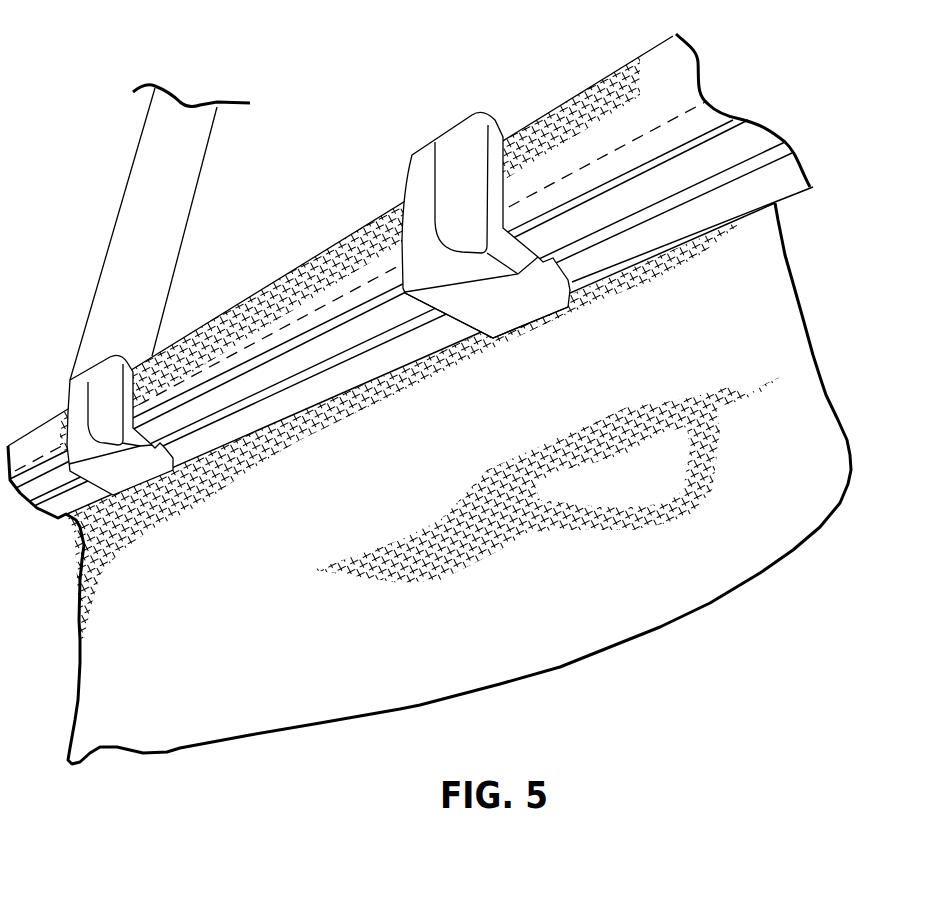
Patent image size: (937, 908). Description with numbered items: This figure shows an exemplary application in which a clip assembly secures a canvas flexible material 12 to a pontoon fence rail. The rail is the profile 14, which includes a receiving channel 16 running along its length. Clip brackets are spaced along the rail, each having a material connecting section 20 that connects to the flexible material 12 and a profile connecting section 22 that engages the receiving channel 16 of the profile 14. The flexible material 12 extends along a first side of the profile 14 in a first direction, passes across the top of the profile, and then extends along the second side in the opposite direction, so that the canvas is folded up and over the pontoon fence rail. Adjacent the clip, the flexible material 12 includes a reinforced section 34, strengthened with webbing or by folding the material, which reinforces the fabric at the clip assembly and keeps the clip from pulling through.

The flexible material 12 is at (600, 632).
The profile 14 is at (680, 173).
The receiving channel 16 is at (580, 247).
The material connecting section 20 is at (447, 270).
The profile connecting section 22 is at (490, 310).
The reinforced section 34 is at (282, 290).